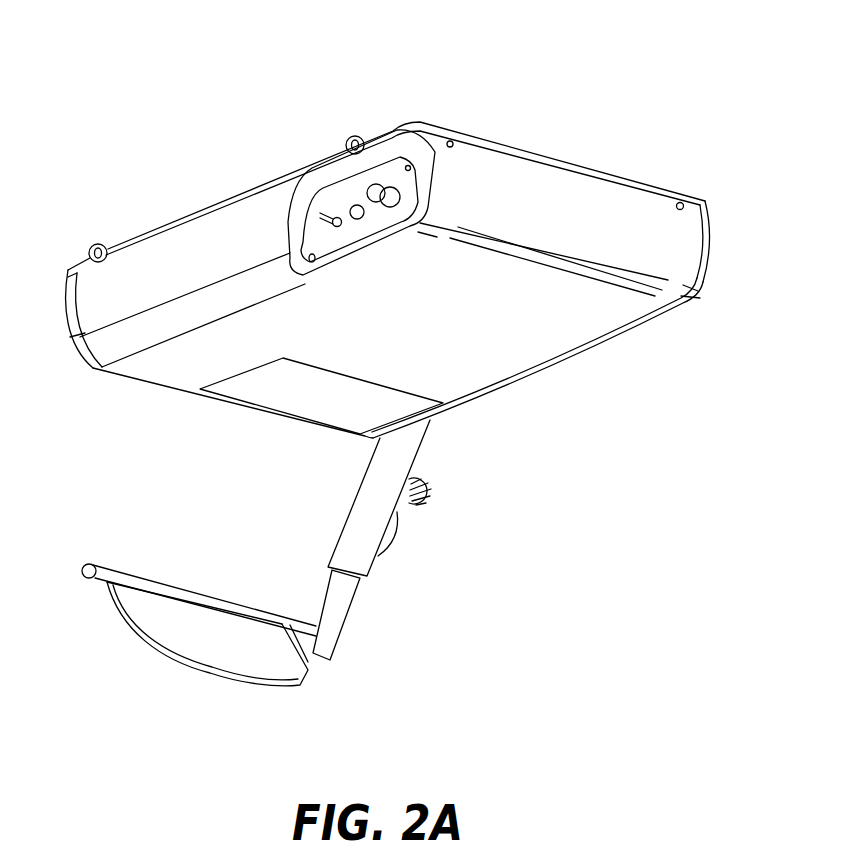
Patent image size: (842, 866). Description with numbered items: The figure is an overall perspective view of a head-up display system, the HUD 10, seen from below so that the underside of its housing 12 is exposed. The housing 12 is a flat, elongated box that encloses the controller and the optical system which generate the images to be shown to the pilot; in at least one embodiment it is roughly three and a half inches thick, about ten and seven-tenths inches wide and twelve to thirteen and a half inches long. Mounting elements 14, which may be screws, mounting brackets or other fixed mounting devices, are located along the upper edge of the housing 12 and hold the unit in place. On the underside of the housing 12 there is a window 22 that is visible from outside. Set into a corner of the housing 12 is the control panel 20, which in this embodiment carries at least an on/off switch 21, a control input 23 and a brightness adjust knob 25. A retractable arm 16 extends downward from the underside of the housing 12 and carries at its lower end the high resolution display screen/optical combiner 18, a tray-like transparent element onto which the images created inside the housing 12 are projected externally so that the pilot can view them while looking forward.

The HUD 10 is at (567, 503).
The housing 12 is at (197, 245).
The mounting elements 14 is at (96, 246).
The retractable arm 16 is at (385, 568).
The high resolution display screen/optical combiner 18 is at (167, 653).
The control panel 20 is at (445, 200).
The on/off switch 21 is at (322, 216).
The window 22 is at (308, 395).
The control input 23 is at (357, 205).
The brightness adjust knob 25 is at (385, 186).